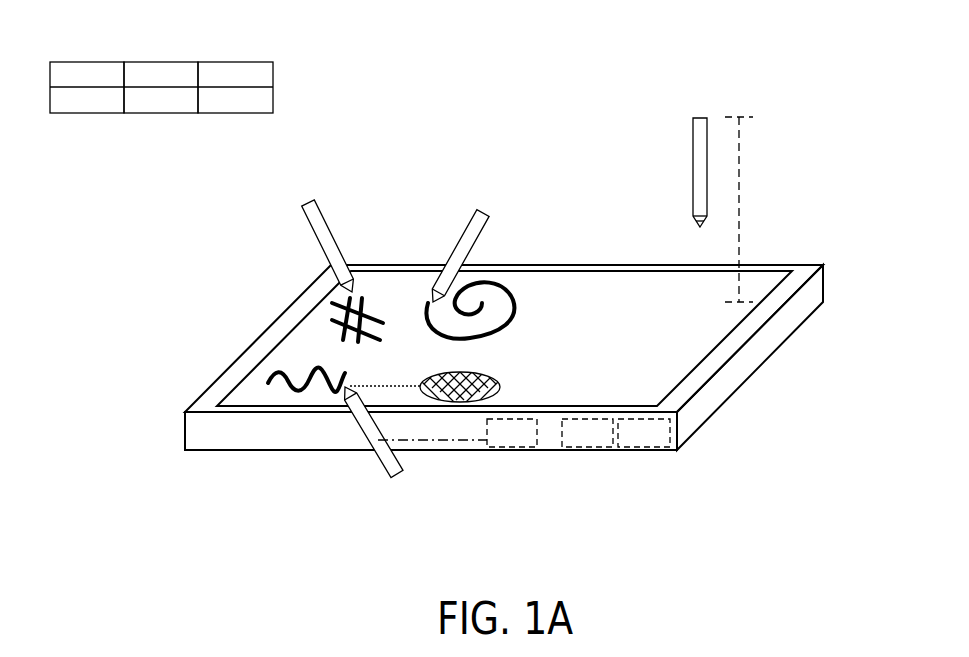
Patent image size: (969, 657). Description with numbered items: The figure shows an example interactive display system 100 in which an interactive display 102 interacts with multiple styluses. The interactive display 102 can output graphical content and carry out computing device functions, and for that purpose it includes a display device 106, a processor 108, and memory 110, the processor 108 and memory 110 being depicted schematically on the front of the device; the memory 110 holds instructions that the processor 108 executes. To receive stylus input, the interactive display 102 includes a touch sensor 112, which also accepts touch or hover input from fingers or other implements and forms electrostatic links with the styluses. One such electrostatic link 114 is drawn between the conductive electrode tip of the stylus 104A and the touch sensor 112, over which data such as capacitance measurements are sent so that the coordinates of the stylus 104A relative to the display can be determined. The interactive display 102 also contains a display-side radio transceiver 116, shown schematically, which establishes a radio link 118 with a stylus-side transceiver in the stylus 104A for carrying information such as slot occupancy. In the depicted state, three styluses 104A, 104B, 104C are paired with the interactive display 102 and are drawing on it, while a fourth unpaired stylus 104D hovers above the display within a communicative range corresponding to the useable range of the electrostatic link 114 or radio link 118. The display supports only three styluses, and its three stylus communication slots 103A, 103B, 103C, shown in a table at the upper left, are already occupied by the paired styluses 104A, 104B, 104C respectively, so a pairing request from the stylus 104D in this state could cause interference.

The interactive display system 100 is at (513, 70).
The interactive display 102 is at (823, 265).
The stylus communication slot 103A is at (88, 40).
The stylus communication slot 103B is at (161, 40).
The stylus communication slot 103C is at (234, 40).
The stylus 104A is at (403, 472).
The stylus 104B is at (488, 222).
The stylus 104C is at (325, 213).
The unpaired stylus 104D is at (692, 153).
The display device 106 is at (662, 378).
The processor 108 is at (605, 443).
The memory 110 is at (661, 443).
The touch sensor 112 is at (500, 390).
The electrostatic link 114 is at (388, 387).
The display-side radio transceiver 116 is at (530, 443).
The radio link 118 is at (432, 443).